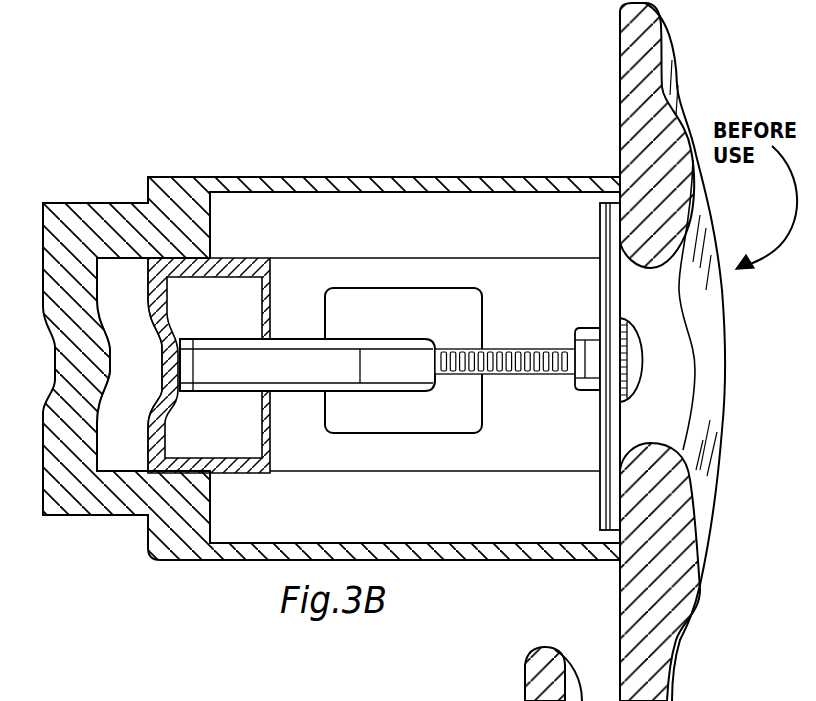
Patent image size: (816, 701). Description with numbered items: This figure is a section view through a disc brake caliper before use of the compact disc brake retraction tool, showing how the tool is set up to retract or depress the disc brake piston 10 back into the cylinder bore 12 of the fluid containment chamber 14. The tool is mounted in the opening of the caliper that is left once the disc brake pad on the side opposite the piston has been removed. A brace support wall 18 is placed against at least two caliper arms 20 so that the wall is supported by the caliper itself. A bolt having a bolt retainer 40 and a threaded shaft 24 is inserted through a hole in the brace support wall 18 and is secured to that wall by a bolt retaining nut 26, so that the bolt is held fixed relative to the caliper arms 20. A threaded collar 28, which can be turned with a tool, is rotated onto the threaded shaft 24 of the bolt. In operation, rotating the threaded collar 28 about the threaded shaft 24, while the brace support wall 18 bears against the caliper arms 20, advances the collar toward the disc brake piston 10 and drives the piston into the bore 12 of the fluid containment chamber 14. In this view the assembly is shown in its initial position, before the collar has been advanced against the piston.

The disc brake piston 10 is at (251, 462).
The cylinder bore 12 is at (125, 486).
The fluid containment chamber 14 is at (121, 437).
The brace support wall 18 is at (600, 243).
The caliper arms 20 is at (620, 148).
The bolt threaded shaft 24 is at (510, 375).
The bolt retaining nut 26 is at (590, 328).
The threaded collar 28 is at (283, 360).
The bolt retainer 40 is at (666, 318).